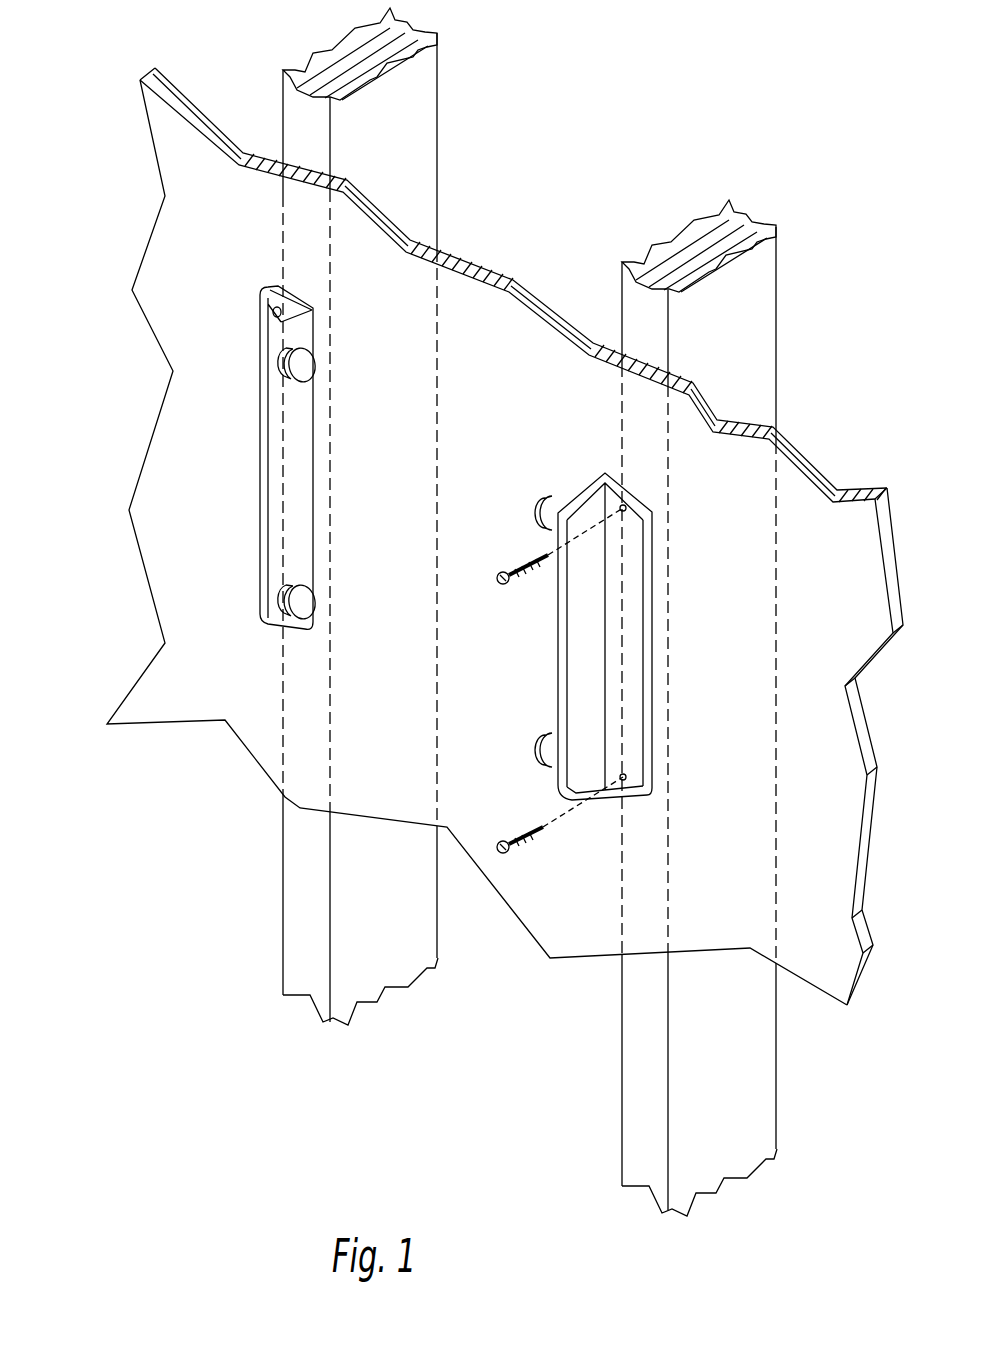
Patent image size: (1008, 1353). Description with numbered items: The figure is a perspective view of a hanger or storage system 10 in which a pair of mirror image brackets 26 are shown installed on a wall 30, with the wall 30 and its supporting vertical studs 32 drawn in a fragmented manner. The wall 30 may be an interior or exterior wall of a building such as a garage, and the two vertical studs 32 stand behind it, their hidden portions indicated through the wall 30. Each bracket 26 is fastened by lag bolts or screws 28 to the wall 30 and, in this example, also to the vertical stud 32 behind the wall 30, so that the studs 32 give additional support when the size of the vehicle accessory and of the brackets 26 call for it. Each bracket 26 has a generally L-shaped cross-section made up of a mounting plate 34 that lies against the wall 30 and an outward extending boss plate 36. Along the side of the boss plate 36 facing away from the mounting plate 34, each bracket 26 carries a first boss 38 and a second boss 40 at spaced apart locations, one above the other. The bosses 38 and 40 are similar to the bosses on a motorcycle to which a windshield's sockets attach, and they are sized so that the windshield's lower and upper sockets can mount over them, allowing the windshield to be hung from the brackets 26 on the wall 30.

The hanger or storage system 10 is at (112, 360).
The brackets 26 is at (258, 472).
The lag bolts or screws 28 is at (506, 572).
The wall 30 is at (500, 367).
The vertical studs 32 is at (430, 102).
The mounting plate 34 is at (632, 660).
The boss plate 36 is at (300, 474).
The first boss 38 is at (315, 360).
The second boss 40 is at (316, 594).